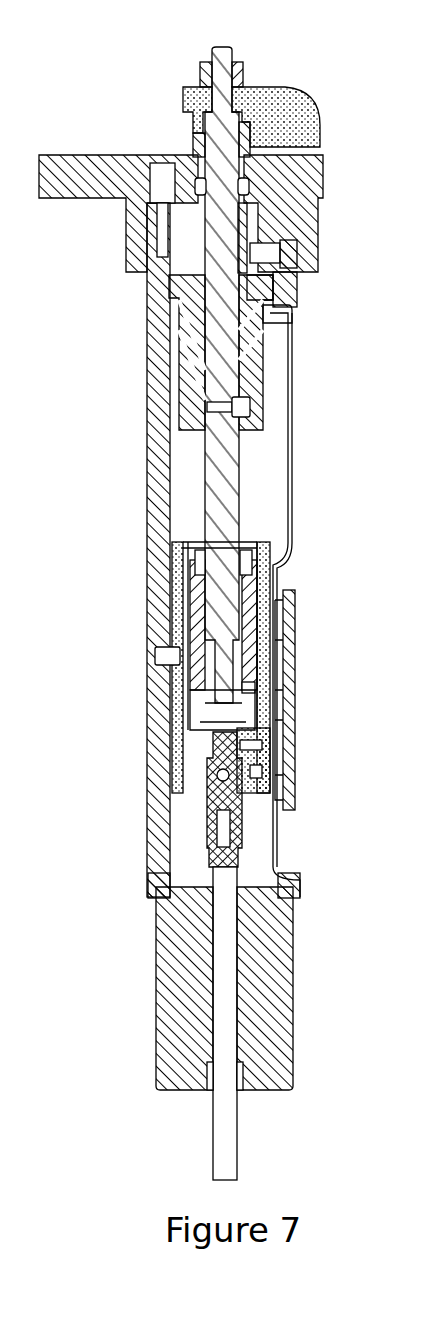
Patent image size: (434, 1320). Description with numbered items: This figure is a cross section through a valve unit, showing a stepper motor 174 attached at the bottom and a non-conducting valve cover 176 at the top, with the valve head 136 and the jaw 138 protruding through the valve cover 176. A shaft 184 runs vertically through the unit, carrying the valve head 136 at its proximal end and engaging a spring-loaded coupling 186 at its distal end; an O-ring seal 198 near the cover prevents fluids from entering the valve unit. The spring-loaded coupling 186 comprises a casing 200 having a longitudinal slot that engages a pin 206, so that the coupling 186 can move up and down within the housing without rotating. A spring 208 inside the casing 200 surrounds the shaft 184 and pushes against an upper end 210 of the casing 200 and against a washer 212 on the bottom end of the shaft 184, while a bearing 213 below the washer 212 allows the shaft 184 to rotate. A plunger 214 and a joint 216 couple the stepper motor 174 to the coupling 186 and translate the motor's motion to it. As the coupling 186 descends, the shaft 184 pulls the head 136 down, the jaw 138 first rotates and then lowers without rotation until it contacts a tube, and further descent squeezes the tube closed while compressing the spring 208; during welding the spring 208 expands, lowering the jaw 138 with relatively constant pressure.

The valve head 136 is at (192, 102).
The jaw 138 is at (308, 103).
The O-ring seal 198 is at (250, 187).
The valve cover 176 is at (307, 188).
The shaft 184 is at (205, 467).
The spring-loaded coupling 186 is at (265, 585).
The upper end 210 is at (202, 562).
The casing 200 is at (187, 612).
The pin 206 is at (157, 660).
The spring 208 is at (247, 655).
The washer 212 is at (250, 688).
The bearing 213 is at (248, 712).
The joint 216 is at (207, 807).
The plunger 214 is at (223, 955).
The stepper motor 174 is at (293, 958).